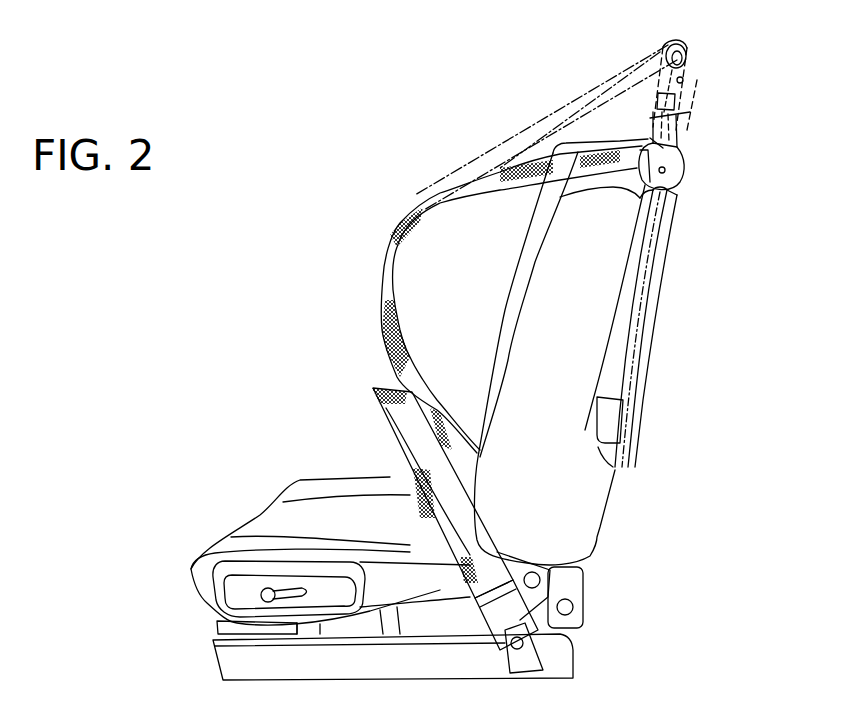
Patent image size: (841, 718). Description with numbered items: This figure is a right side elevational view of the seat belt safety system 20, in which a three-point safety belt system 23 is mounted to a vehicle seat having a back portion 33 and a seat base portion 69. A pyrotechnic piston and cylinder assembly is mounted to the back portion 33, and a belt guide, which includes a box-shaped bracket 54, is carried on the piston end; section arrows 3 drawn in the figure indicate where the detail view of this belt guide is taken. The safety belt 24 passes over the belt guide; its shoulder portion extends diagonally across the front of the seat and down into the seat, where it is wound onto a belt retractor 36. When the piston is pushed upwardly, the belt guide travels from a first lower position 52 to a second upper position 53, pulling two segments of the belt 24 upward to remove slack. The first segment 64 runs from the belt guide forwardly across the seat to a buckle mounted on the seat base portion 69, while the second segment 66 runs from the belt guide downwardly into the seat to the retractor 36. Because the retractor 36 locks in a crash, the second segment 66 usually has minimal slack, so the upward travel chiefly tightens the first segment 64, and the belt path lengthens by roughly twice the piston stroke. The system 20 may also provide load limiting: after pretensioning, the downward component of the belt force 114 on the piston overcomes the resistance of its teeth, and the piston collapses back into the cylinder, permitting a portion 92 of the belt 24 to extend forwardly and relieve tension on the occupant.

The seat belt safety system 20 is at (404, 134).
The safety belt 24 is at (385, 258).
The first segment 64 is at (517, 140).
The seat back frame 3 is at (665, 130).
The second segment 66 is at (692, 92).
The second upper position 53 is at (660, 50).
The box-shaped bracket 54 is at (668, 168).
The first lower position 52 is at (648, 124).
The portion of the belt 92 is at (606, 88).
The belt force 114 is at (683, 32).
The three-point safety belt system 23 is at (640, 187).
The belt retractor 36 is at (616, 428).
The back portion 33 is at (600, 527).
The seat base portion 69 is at (190, 594).